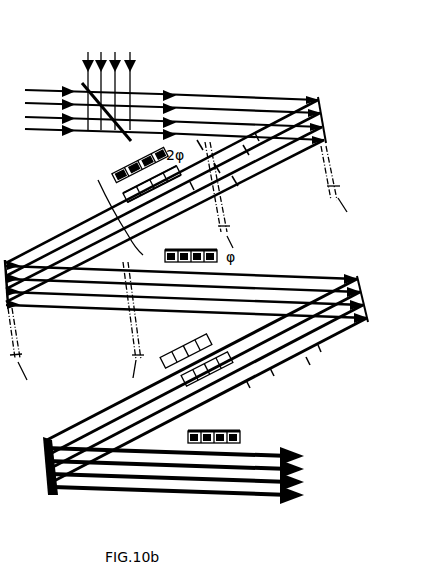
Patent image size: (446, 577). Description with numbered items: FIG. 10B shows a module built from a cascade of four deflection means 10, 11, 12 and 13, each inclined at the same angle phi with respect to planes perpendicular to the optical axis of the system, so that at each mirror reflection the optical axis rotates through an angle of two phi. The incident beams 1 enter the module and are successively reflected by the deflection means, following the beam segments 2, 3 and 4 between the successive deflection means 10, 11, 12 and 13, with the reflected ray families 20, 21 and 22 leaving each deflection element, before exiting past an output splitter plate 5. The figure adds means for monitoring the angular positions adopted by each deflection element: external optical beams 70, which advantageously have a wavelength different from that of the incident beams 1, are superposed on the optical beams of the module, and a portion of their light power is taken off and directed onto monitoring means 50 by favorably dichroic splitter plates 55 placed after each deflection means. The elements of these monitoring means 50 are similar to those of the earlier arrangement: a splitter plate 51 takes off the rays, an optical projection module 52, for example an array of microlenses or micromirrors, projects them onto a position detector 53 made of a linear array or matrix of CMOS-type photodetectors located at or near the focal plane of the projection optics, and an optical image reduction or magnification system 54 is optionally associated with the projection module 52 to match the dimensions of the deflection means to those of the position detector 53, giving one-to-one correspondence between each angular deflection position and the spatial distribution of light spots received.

The input laser beam 1 is at (50, 127).
The beam segment toward first mirror 2 is at (272, 150).
The beam segment between mirrors 3 is at (76, 312).
The beam segment toward last mirror 4 is at (319, 346).
The output grating 5 is at (206, 439).
The deflection means 10 is at (327, 162).
The deflection means 11 is at (8, 262).
The deflection means 12 is at (366, 326).
The deflection means 13 is at (52, 440).
The reflected beam from first mirror 20 is at (234, 184).
The beam incidence axis 21 is at (120, 310).
The reflected beam from third mirror 22 is at (274, 380).
The monitoring means 50 is at (107, 217).
The splitter plate 51 is at (158, 183).
The optical projection module 52 is at (118, 184).
The position detector 53 is at (140, 162).
The optical image reduction or magnification system 54 is at (156, 160).
The dichroic splitter plates 55 is at (199, 216).
The external optical beams 70 is at (131, 83).